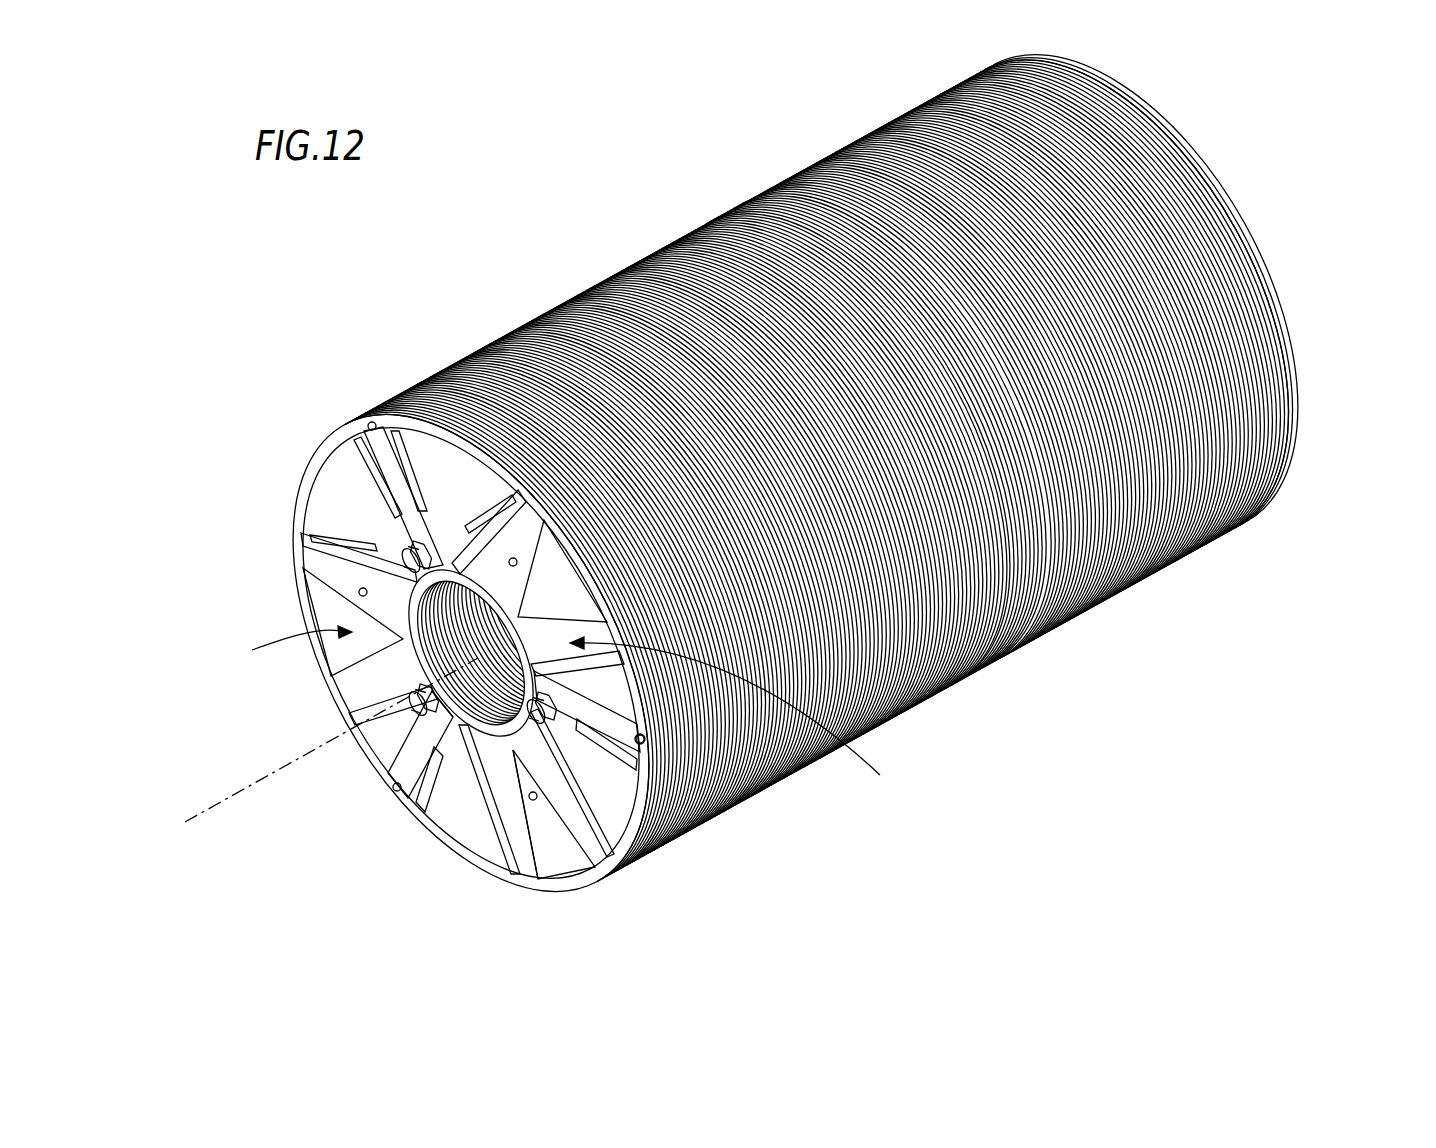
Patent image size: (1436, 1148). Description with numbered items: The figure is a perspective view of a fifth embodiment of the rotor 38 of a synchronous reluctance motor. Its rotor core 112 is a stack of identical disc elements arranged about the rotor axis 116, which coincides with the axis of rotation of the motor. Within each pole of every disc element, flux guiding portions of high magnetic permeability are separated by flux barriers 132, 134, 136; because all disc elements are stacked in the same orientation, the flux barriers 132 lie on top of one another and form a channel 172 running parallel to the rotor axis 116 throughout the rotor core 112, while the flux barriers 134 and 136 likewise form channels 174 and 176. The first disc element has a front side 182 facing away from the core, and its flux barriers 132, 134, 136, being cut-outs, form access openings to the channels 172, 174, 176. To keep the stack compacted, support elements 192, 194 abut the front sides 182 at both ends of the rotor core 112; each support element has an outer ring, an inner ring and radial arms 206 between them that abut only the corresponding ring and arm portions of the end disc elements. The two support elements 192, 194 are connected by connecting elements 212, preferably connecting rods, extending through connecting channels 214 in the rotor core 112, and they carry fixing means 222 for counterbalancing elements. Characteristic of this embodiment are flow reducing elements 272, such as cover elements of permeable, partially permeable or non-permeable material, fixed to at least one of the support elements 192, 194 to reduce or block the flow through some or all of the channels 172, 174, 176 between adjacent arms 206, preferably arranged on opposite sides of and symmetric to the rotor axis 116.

The rotor 38 is at (665, 207).
The rotor core 112 is at (1020, 597).
The rotor axis 116 is at (212, 805).
The flux barrier 132 is at (352, 462).
The flux barrier 134 is at (340, 522).
The flux barrier 136 is at (330, 557).
The channel 172 is at (470, 805).
The channel 174 is at (452, 790).
The channel 176 is at (400, 762).
The front side 182 is at (585, 775).
The support element 192 is at (512, 530).
The support element 194 is at (1258, 270).
The radial arm 206 is at (480, 555).
The connecting element 212 is at (422, 543).
The connecting channel 214 is at (520, 780).
The fixing means 222 is at (648, 752).
The flow reducing element 272 is at (566, 712).